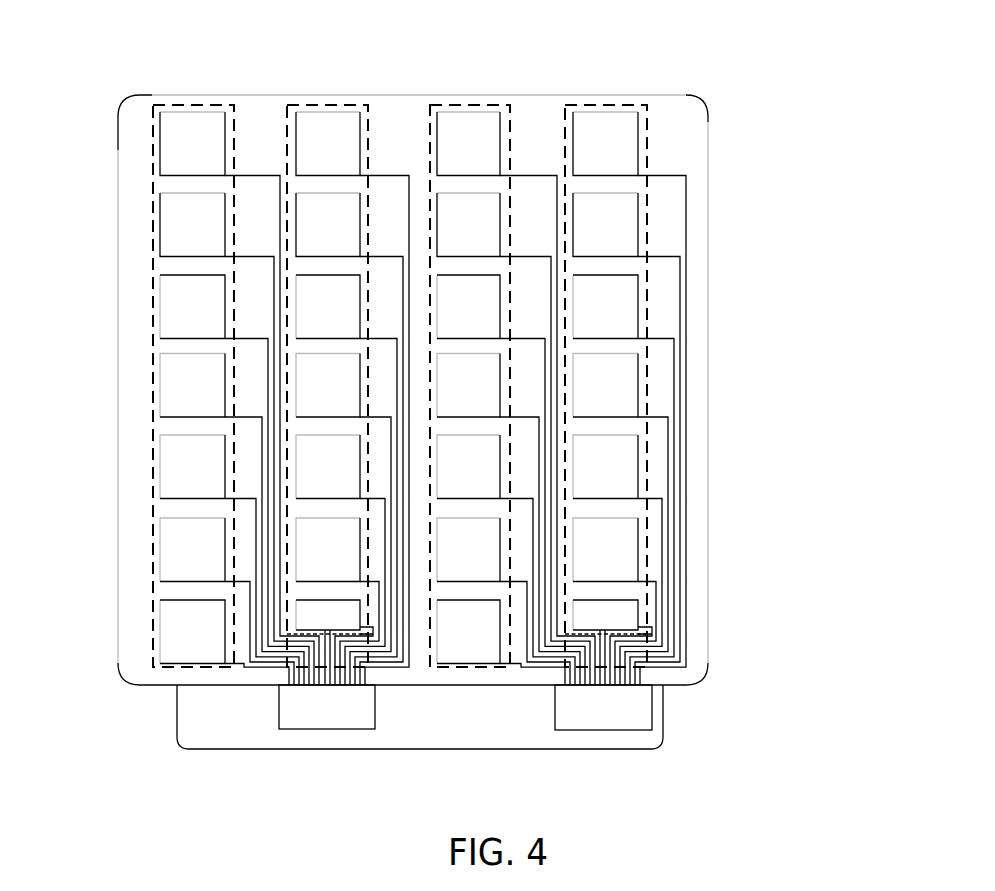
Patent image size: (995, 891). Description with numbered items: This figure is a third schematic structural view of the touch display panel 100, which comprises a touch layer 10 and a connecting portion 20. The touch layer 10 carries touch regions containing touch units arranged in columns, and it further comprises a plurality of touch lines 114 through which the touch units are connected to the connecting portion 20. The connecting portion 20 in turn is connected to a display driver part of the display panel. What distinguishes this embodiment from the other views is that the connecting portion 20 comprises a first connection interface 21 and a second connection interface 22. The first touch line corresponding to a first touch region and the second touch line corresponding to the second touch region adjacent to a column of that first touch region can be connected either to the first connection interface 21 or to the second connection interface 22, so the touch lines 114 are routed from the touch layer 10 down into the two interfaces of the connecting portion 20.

The touch display panel 100 is at (80, 64).
The touch layer 10 is at (692, 128).
The touch lines 114 is at (688, 609).
The connecting portion 20 is at (487, 707).
The first connection interface 21 is at (628, 717).
The second connection interface 22 is at (303, 720).